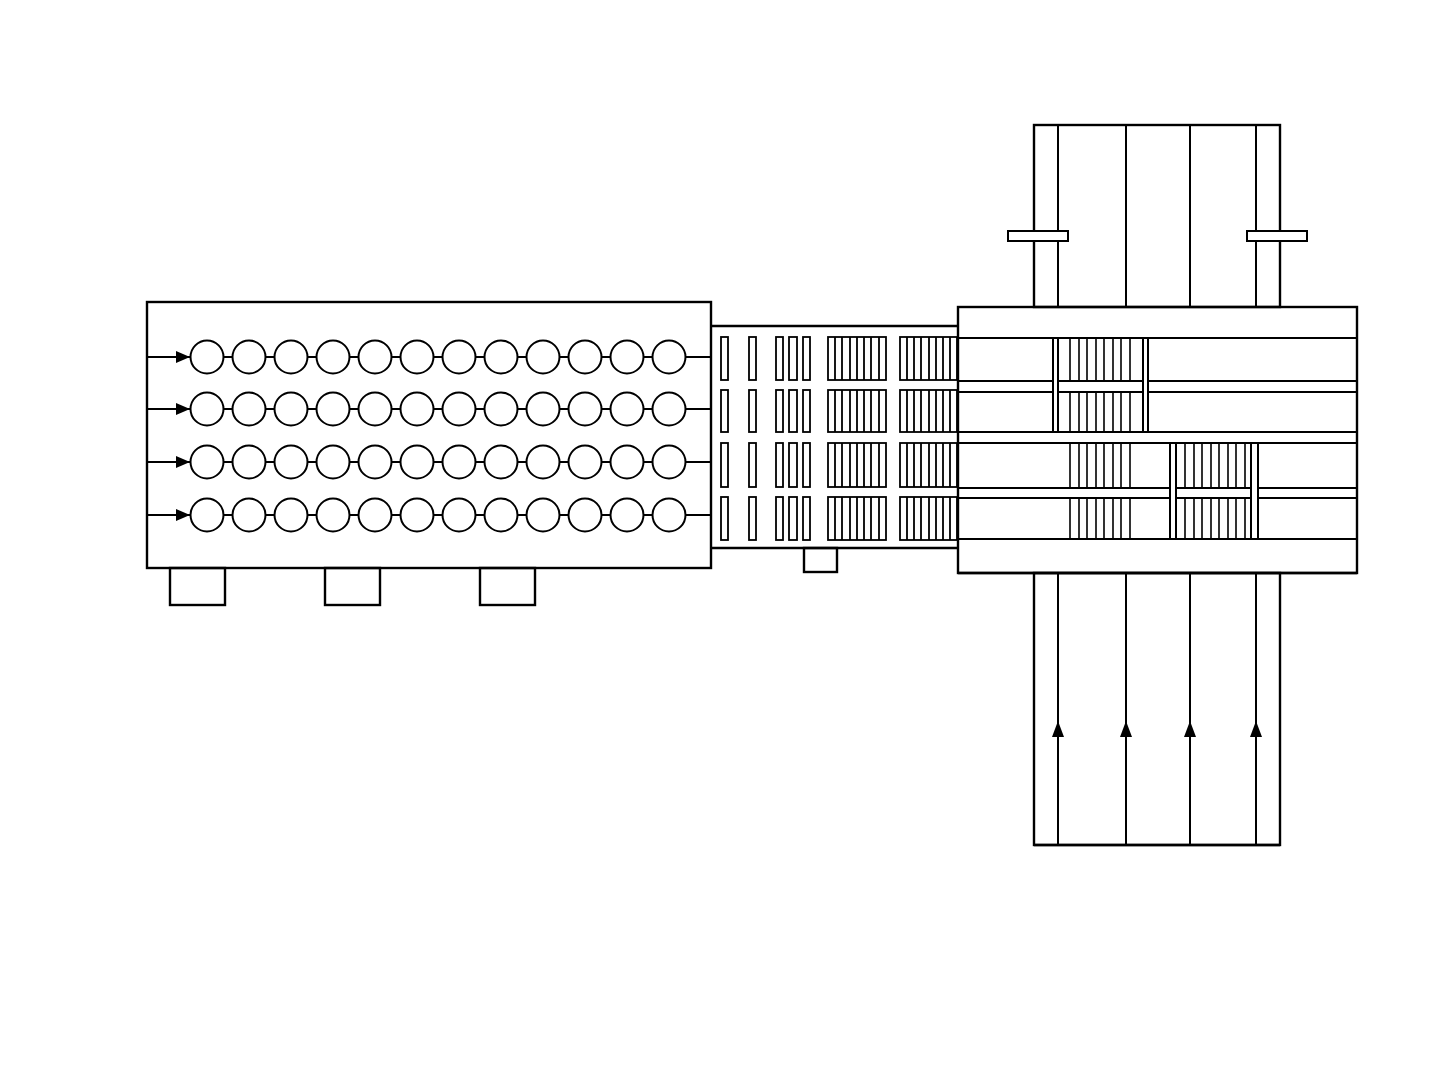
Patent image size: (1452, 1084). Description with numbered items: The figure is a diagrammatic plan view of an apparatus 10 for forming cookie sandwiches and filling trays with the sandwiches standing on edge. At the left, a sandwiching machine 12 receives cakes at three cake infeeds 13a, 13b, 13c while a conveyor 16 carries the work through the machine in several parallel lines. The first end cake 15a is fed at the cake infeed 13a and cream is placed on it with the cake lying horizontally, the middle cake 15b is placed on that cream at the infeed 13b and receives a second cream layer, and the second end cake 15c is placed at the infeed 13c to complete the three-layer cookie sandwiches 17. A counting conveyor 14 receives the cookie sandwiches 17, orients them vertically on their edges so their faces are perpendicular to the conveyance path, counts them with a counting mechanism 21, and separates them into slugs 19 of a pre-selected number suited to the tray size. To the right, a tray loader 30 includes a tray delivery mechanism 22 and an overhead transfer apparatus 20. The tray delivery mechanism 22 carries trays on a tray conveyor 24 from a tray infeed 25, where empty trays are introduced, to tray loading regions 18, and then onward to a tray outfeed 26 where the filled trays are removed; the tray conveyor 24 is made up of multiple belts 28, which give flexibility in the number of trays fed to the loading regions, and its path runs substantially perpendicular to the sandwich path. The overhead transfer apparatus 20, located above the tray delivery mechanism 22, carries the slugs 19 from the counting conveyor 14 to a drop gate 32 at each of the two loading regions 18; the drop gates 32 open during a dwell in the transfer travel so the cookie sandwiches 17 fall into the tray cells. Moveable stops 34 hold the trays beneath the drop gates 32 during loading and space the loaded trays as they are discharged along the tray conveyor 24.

The apparatus 10 is at (1390, 208).
The sandwiching machine 12 is at (467, 303).
The cake infeed 13a is at (193, 598).
The cake infeed 13b is at (348, 598).
The cake infeed 13c is at (513, 598).
The counting conveyor 14 is at (780, 326).
The first end cake 15a is at (197, 342).
The middle cake 15b is at (373, 347).
The second end cake 15c is at (543, 347).
The conveyor 16 is at (162, 352).
The cookie sandwiches 17 is at (670, 523).
The tray loading regions 18 is at (1190, 400).
The slugs 19 is at (878, 338).
The overhead transfer apparatus 20 is at (1366, 359).
The counting mechanism 21 is at (818, 573).
The tray delivery mechanism 22 is at (1282, 685).
The tray conveyor 24 is at (1237, 765).
The tray infeed 25 is at (1222, 847).
The tray outfeed 26 is at (1280, 167).
The belts 28 is at (1058, 688).
The tray loader 30 is at (1315, 575).
The drop gate 32 is at (1053, 367).
The moveable stops 34 is at (1008, 236).